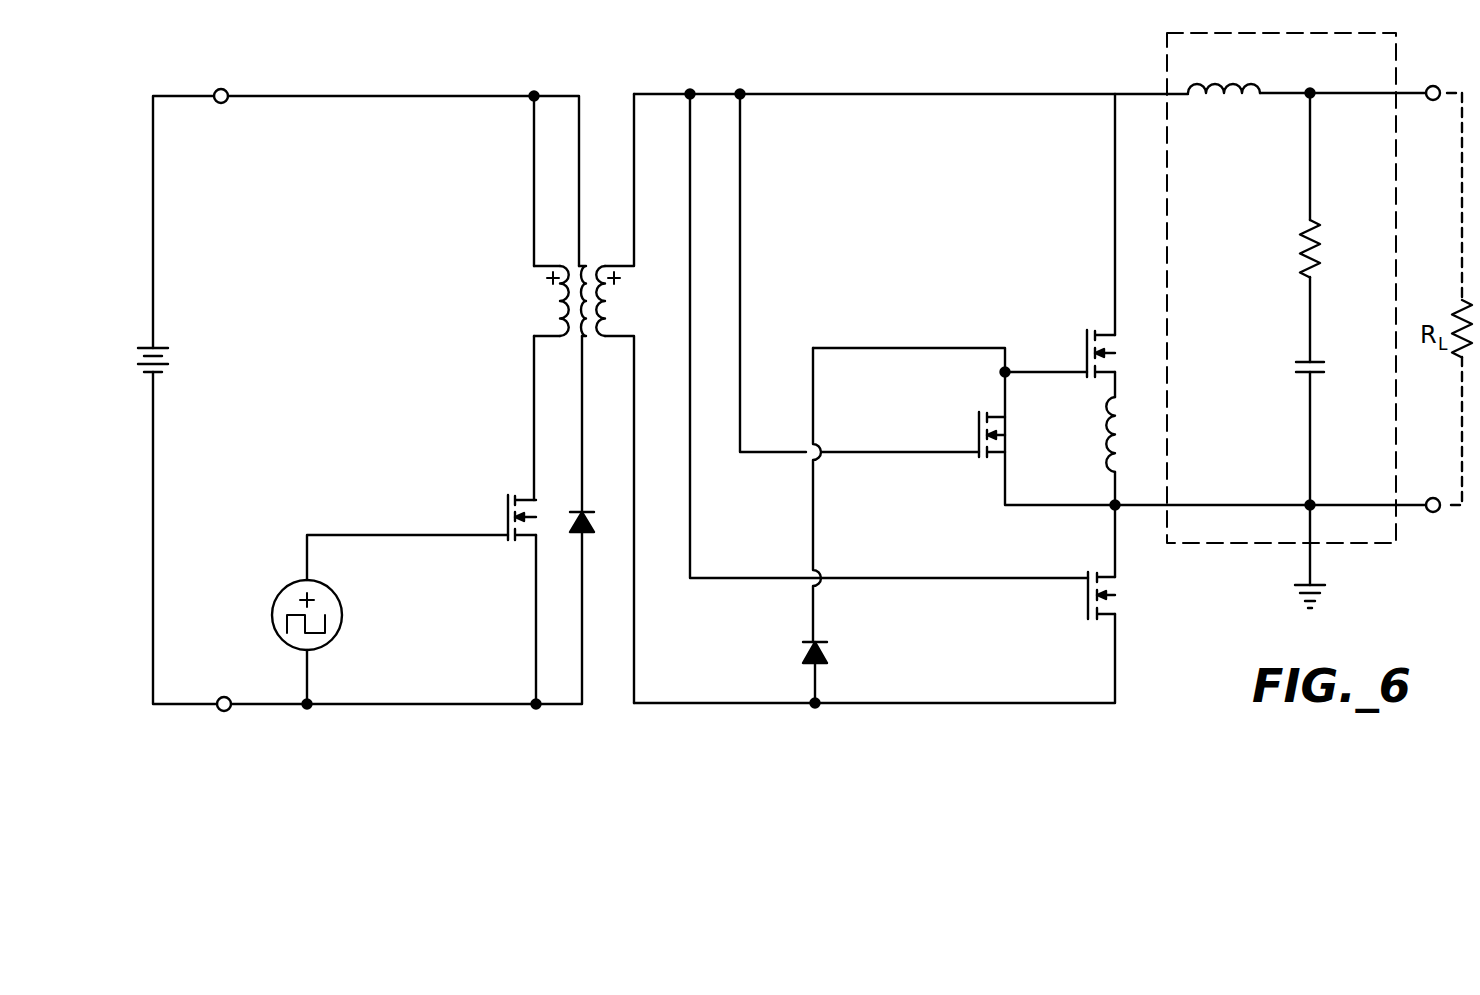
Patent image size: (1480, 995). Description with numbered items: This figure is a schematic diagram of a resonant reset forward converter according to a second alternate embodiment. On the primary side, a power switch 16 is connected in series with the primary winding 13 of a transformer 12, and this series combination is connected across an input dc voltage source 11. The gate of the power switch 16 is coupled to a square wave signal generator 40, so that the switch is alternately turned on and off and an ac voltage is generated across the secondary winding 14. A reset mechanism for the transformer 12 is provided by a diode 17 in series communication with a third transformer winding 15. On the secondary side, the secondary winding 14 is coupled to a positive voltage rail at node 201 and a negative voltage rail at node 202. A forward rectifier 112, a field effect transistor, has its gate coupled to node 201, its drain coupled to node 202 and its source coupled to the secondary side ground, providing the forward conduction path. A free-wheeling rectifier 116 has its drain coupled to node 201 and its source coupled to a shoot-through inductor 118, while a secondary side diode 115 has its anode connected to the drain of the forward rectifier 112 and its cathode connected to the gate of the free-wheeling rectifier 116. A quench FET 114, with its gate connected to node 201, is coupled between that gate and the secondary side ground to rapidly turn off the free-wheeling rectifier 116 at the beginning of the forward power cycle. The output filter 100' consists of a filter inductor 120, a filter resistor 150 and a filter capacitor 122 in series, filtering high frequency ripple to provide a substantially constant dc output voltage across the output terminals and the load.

The input dc voltage source 11 is at (160, 346).
The transformer 12 is at (592, 398).
The primary winding 13 is at (558, 302).
The secondary winding 14 is at (608, 302).
The third transformer winding 15 is at (588, 265).
The power switch 16 is at (503, 515).
The diode 17 is at (576, 508).
The square wave signal generator 40 is at (345, 617).
The node 201 is at (692, 92).
The node 202 is at (813, 706).
The forward rectifier 112 is at (1085, 597).
The quench FET 114 is at (975, 435).
The secondary side diode 115 is at (820, 640).
The free-wheeling rectifier 116 is at (1083, 352).
The shoot-through inductor 118 is at (1098, 430).
The filter inductor 120 is at (1232, 82).
The filter capacitor 122 is at (1305, 374).
The filter resistor 150 is at (1320, 246).
The output filter 100' is at (1279, 308).